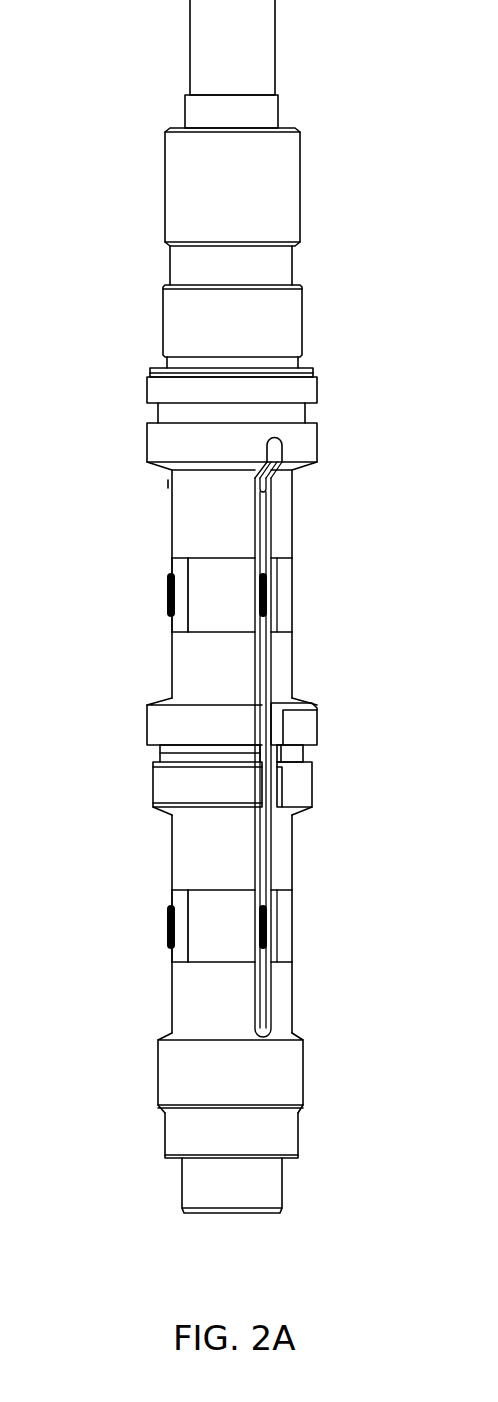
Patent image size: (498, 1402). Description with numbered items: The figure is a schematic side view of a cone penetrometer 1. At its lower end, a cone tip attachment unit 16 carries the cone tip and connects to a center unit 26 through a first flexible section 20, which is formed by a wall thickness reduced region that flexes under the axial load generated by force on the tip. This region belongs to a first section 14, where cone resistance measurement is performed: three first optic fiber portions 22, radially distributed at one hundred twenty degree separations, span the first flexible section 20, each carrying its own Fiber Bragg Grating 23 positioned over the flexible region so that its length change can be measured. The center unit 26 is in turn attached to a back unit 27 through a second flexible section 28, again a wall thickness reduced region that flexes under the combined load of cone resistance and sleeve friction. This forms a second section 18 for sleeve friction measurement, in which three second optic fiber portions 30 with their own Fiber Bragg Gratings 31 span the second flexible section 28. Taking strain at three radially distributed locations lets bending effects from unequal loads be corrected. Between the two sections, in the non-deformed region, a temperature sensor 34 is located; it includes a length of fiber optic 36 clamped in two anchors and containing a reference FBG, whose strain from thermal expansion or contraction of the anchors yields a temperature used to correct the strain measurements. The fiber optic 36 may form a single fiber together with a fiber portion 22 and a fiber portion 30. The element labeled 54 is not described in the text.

The cone penetrometer 1 is at (120, 1172).
The coupling body 54 is at (303, 346).
The back unit 27 is at (317, 435).
The second flexible section 28 is at (280, 618).
The second optic fiber portions 30 is at (165, 570).
The Fiber Bragg Grating 31 is at (167, 600).
The second section 18 is at (158, 610).
The temperature sensor 34 is at (302, 756).
The fiber optic 36 is at (302, 756).
The center unit 26 is at (310, 790).
The first flexible section 20 is at (280, 948).
The first optic fiber portions 22 is at (167, 900).
The Fiber Bragg Grating 23 is at (167, 930).
The first section 14 is at (158, 950).
The cone tip attachment unit 16 is at (300, 1152).